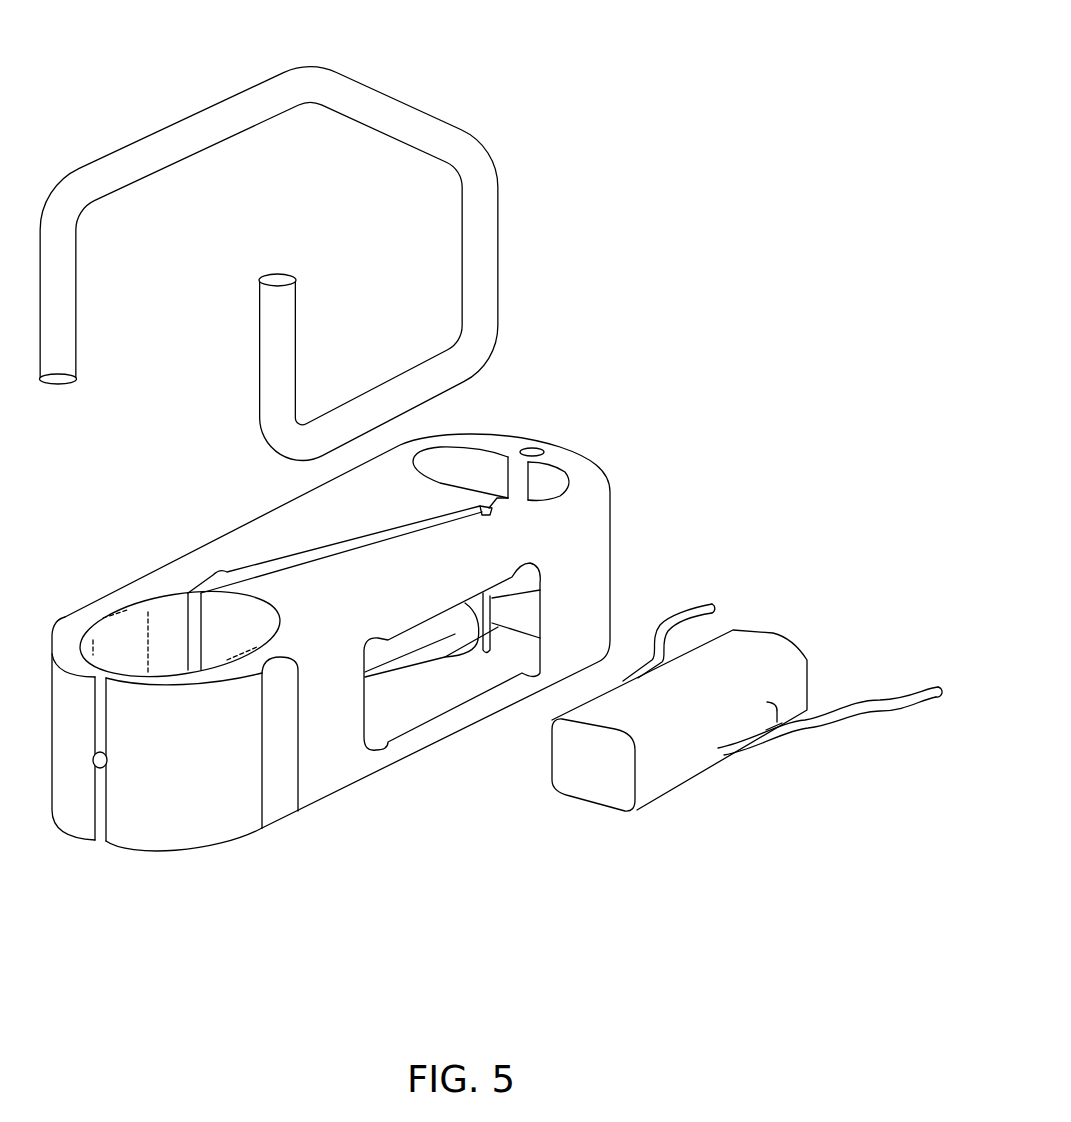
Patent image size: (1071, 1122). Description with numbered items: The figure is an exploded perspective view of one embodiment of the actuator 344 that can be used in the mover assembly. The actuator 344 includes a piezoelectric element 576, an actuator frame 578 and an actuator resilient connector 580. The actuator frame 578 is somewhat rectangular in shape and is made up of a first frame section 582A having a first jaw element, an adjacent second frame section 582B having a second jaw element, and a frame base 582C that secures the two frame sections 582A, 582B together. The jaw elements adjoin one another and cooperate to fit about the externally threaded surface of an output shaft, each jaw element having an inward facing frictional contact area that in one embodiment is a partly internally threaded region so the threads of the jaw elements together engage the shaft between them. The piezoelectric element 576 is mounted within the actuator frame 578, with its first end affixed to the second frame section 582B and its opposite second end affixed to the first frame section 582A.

The actuator 344 is at (580, 267).
The piezoelectric element 576 is at (728, 658).
The actuator frame 578 is at (320, 788).
The actuator resilient connector 580 is at (186, 135).
The first frame section 582A is at (383, 770).
The second frame section 582B is at (210, 547).
The frame base 582C is at (565, 460).